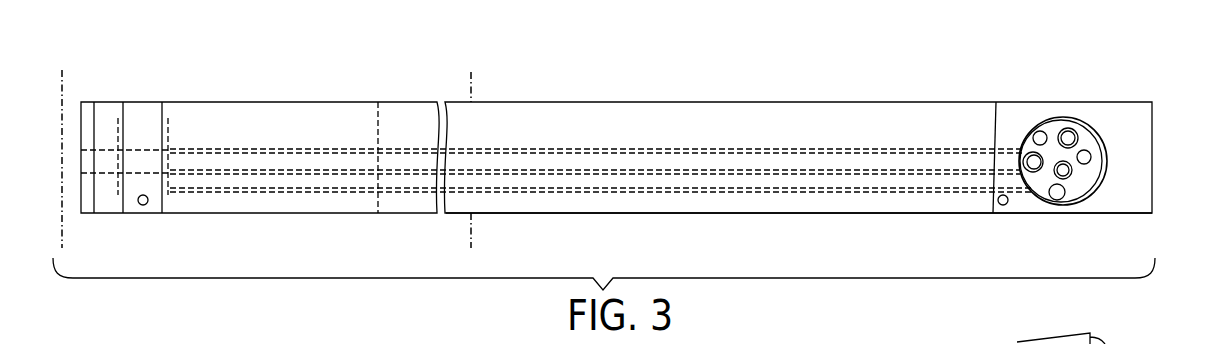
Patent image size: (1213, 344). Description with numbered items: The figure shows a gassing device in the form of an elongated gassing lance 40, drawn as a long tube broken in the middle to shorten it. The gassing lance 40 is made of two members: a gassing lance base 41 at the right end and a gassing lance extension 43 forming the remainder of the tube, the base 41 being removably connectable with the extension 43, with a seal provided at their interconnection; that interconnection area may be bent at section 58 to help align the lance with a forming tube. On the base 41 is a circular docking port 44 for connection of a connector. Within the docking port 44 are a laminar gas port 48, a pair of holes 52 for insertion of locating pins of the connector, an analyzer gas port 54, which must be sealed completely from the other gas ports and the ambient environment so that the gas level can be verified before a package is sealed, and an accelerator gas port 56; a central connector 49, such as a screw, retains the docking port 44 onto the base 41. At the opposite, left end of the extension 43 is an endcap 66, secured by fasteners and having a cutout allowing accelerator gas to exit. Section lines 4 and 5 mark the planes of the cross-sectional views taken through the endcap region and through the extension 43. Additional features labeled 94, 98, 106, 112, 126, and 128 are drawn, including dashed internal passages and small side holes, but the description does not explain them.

The section line 4- 4 is at (62, 70).
The section line 5- 5 is at (471, 70).
The gassing lance 40 is at (386, 77).
The gassing lance base 41 is at (1020, 118).
The gassing lance extension 43 is at (555, 205).
The docking port 44 is at (1027, 199).
The laminar gas port 48 is at (1068, 128).
The connector 49 is at (1073, 172).
The holes 52 is at (1033, 135).
The analyzer gas port 54 is at (1062, 193).
The accelerator gas port 56 is at (1035, 173).
The bent section 58 is at (862, 190).
The endcap 66 is at (88, 213).
The hub section 94 is at (118, 213).
The lumen 98 is at (723, 142).
The side port 106 is at (997, 205).
The hub body 112 is at (147, 112).
The side hole 126 is at (148, 200).
The lumen 128 is at (629, 188).